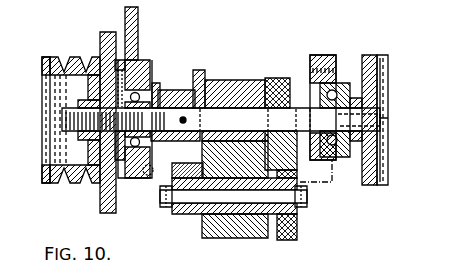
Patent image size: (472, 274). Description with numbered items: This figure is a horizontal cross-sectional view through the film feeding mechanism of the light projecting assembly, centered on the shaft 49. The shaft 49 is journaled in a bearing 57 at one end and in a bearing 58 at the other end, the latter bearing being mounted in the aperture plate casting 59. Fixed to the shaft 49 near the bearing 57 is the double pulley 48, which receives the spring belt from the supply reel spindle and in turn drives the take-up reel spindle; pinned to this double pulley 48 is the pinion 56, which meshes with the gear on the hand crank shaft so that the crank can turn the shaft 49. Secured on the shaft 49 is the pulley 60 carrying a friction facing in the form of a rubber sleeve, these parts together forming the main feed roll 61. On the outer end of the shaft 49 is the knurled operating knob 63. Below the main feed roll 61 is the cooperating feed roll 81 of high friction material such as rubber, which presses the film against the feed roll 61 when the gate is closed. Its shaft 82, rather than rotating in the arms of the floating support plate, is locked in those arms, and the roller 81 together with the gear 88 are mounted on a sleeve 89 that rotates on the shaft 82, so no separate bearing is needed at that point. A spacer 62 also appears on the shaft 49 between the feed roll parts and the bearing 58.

The double pulley 48 is at (84, 183).
The shaft 49 is at (166, 106).
The pinion 56 is at (103, 40).
The bearing 57 is at (148, 62).
The bearing 58 is at (350, 80).
The aperture plate casting 59 is at (325, 55).
The pulley 60 is at (200, 78).
The feed roll 61 is at (245, 84).
The spacer 62 is at (282, 80).
The knurled operating knob 63 is at (52, 185).
The cooperating feed roll 81 is at (202, 237).
The shaft 82 is at (243, 240).
The gear 88 is at (287, 241).
The sleeve 89 is at (212, 240).